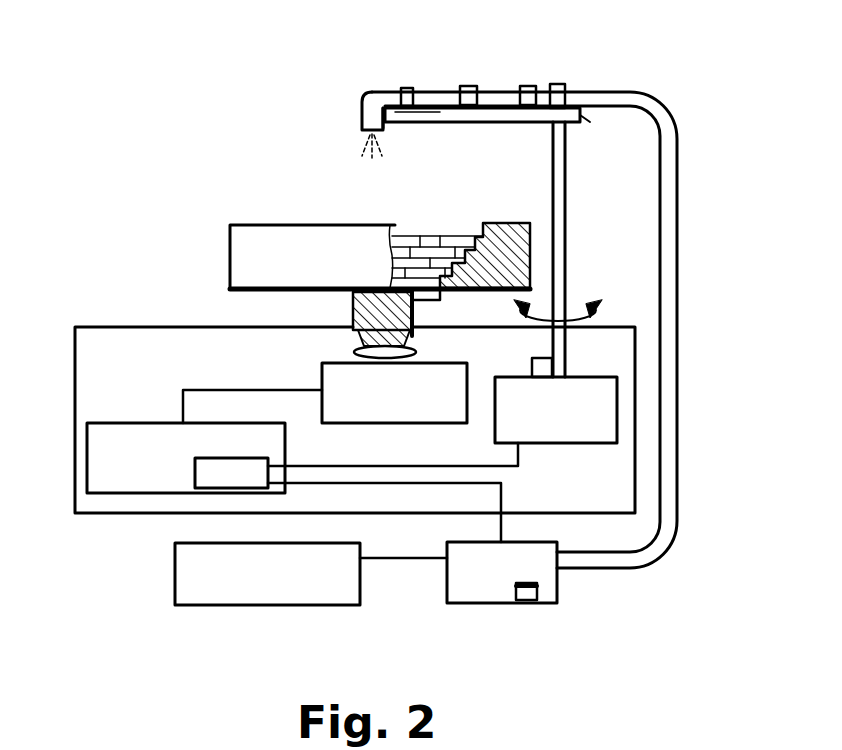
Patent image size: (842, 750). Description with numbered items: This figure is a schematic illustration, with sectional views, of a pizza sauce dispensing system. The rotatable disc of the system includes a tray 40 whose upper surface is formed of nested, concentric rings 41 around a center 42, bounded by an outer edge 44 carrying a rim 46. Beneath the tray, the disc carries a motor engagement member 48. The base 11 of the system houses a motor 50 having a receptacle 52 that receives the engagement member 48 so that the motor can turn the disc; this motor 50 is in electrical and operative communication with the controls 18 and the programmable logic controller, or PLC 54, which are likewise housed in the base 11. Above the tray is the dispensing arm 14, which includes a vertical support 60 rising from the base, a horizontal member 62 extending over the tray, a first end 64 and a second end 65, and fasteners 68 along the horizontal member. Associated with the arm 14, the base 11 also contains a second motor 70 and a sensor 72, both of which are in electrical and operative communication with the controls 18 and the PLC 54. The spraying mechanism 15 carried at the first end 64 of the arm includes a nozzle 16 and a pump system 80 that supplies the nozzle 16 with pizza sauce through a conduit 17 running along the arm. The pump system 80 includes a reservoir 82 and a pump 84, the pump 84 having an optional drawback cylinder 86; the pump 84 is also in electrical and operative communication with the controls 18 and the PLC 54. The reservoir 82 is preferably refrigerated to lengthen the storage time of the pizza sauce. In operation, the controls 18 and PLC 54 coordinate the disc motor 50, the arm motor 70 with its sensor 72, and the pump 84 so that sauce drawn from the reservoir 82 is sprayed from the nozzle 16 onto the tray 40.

The base 11 is at (75, 372).
The dispensing arm 14 is at (470, 118).
The spraying mechanism 15 is at (408, 78).
The nozzle 16 is at (368, 92).
The conduit 17 is at (435, 92).
The controls 18 is at (119, 422).
The tray 40 is at (218, 257).
The nested, concentric rings 41 is at (481, 223).
The center 42 is at (424, 294).
The outer edge 44 is at (497, 224).
The rim 46 is at (528, 222).
The motor engagement member 48 is at (352, 304).
The motor 50 is at (467, 378).
The receptacle 52 is at (412, 342).
The programmable logic controller (PLC) 54 is at (195, 473).
The vertical support 60 is at (566, 180).
The horizontal member 62 is at (416, 118).
The first end 64 is at (390, 128).
The second end 65 is at (582, 120).
The fasteners 68 is at (478, 87).
The motor 70 is at (553, 446).
The sensor 72 is at (534, 362).
The pump system 80 is at (480, 608).
The reservoir 82 is at (265, 606).
The pump 84 is at (558, 593).
The drawback cylinder 86 is at (524, 603).